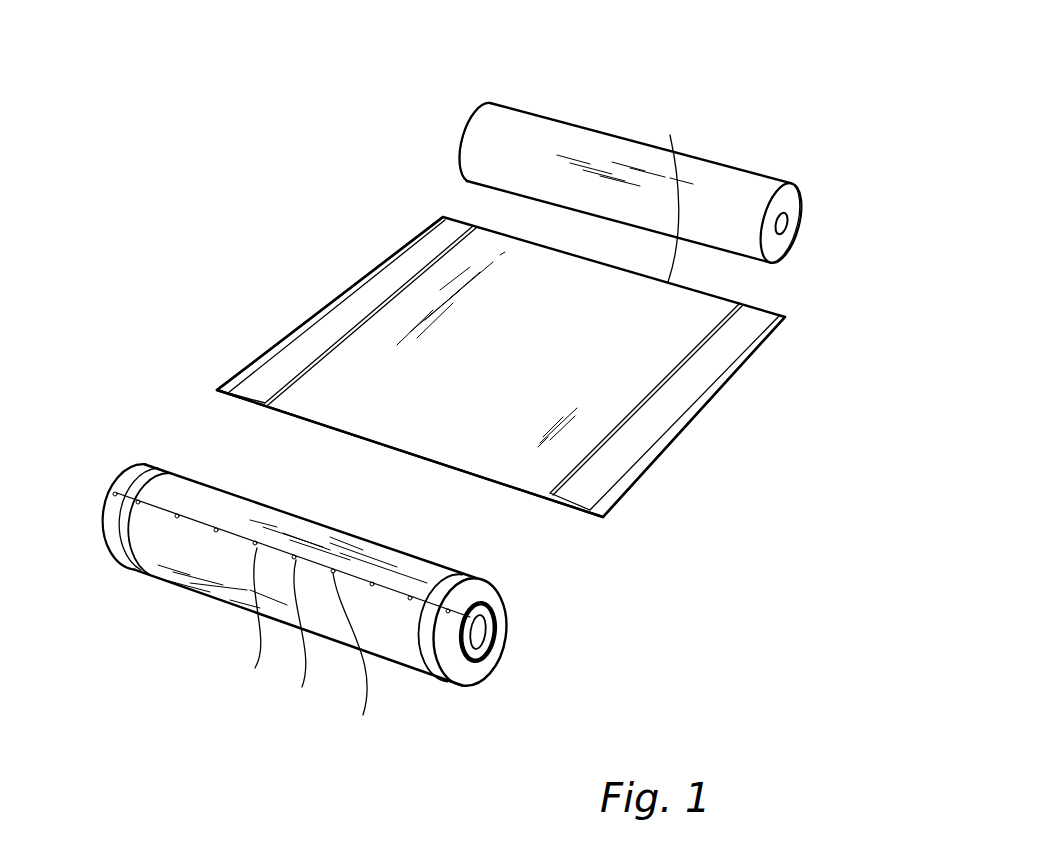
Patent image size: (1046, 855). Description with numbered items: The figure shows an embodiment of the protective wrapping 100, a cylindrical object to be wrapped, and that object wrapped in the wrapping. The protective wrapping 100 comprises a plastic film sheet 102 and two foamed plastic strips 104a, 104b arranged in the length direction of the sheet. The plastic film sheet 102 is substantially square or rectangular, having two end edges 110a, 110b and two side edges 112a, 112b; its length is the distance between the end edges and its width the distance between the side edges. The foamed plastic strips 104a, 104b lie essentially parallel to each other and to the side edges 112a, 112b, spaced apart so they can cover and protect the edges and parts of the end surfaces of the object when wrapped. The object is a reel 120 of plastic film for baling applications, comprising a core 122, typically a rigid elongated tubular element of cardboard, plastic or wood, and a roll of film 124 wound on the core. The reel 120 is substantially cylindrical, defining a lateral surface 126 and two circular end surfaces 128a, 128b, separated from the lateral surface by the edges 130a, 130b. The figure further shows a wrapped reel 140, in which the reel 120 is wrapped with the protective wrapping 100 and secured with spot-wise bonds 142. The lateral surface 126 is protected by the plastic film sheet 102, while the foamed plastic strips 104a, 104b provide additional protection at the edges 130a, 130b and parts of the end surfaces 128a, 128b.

The protective wrapping 100 is at (354, 206).
The plastic film sheet 102 is at (317, 403).
The foamed plastic strip 104a is at (440, 233).
The foamed plastic strip 104b is at (595, 473).
The end edge 110a is at (418, 457).
The end edge 110b is at (690, 195).
The side edge 112a is at (338, 290).
The side edge 112b is at (718, 395).
The reel 120 is at (744, 126).
The core 122 is at (788, 217).
The roll of film 124 is at (797, 185).
The lateral surface 126 is at (597, 150).
The end surface 128a is at (469, 110).
The end surface 128b is at (788, 238).
The edge 130a is at (459, 158).
The edge 130b is at (777, 263).
The wrapped reel 140 is at (186, 627).
The spot-wise bonds 142 is at (291, 622).